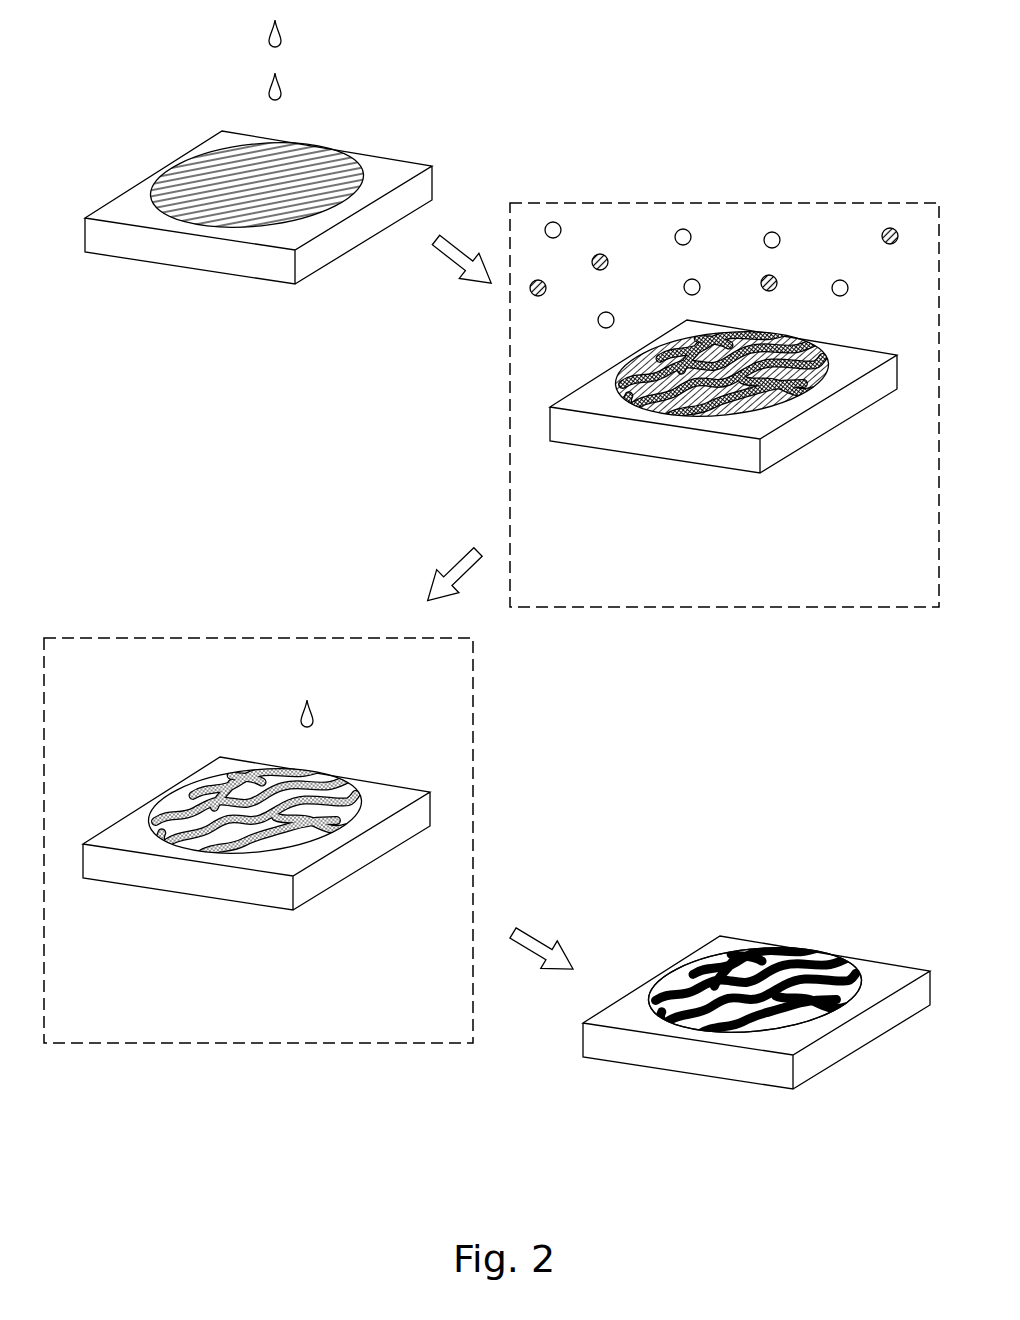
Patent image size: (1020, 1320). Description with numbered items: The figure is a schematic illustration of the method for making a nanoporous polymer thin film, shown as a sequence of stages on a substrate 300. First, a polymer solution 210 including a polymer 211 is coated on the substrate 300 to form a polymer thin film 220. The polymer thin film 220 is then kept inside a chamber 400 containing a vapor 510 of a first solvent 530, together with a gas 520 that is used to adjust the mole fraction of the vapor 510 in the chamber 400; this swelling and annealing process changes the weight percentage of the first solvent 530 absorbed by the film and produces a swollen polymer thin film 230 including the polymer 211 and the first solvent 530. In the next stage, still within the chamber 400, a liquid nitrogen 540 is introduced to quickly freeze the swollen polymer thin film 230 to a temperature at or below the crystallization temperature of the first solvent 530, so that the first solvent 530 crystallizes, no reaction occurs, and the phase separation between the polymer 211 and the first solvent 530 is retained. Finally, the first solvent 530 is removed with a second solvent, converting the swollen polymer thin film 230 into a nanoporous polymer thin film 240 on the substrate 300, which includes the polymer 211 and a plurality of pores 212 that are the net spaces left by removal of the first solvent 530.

The polymer solution 210 is at (282, 34).
The polymer thin film 220 is at (327, 163).
The substrate 300 is at (394, 165).
The chamber 400 is at (822, 202).
The vapor 510 is at (602, 255).
The gas 520 is at (683, 230).
The polymer 211 is at (678, 413).
The first solvent 530 is at (730, 413).
The swollen polymer thin film 230 is at (730, 548).
The liquid nitrogen 540 is at (307, 700).
The pores 212 is at (765, 1032).
The nanoporous polymer thin film 240 is at (763, 1164).